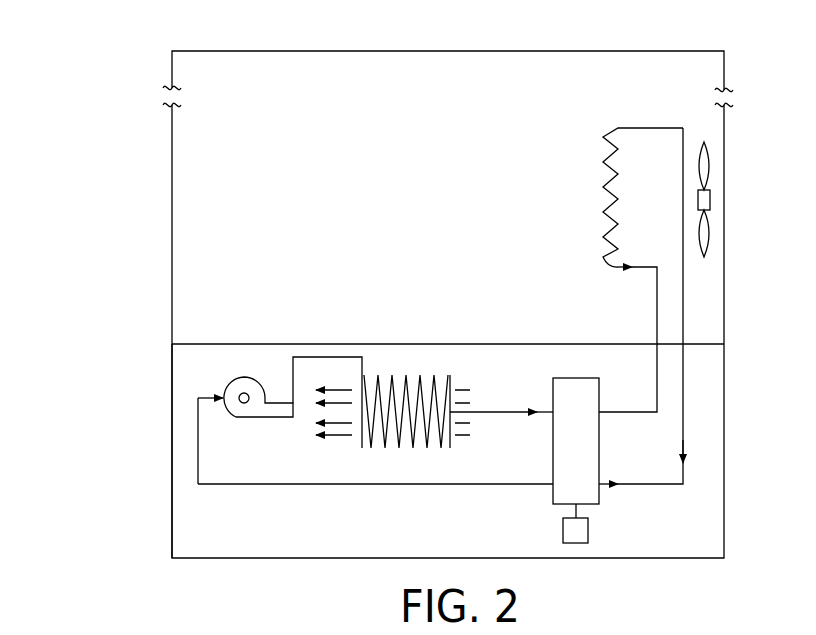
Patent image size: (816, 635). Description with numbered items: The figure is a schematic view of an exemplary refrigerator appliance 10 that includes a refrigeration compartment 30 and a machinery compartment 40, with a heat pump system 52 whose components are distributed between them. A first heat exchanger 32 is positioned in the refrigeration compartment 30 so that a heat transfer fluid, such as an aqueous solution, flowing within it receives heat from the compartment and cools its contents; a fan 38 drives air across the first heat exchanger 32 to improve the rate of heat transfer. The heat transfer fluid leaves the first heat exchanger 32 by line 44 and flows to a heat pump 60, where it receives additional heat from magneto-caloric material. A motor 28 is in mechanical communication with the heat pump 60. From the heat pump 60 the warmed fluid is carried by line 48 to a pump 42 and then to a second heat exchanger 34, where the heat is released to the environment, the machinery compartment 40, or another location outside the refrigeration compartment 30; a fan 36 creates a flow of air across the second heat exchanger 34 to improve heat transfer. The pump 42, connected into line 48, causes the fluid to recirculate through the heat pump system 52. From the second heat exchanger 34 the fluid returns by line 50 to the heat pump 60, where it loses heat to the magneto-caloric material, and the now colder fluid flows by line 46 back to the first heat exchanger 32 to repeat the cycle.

The refrigerator appliance 10 is at (110, 147).
The motor 28 is at (563, 530).
The refrigeration compartment 30 is at (442, 88).
The first heat exchanger 32 is at (602, 172).
The second heat exchanger 34 is at (423, 375).
The fan 36 is at (343, 390).
The fan 38 is at (710, 172).
The machinery compartment 40 is at (200, 373).
The pump 42 is at (231, 378).
The line 44 is at (683, 302).
The line 46 is at (657, 317).
The line 48 is at (297, 360).
The line 50 is at (490, 410).
The heat pump system 52 is at (377, 332).
The heat pump 60 is at (572, 379).